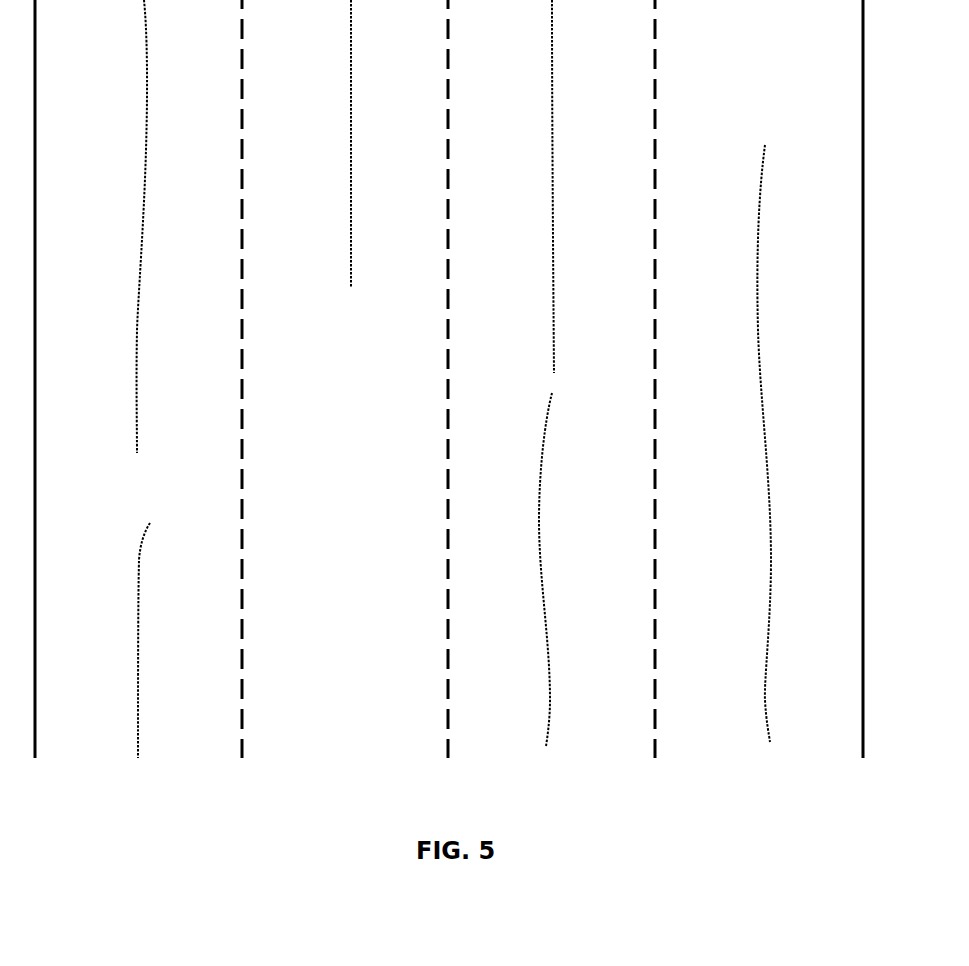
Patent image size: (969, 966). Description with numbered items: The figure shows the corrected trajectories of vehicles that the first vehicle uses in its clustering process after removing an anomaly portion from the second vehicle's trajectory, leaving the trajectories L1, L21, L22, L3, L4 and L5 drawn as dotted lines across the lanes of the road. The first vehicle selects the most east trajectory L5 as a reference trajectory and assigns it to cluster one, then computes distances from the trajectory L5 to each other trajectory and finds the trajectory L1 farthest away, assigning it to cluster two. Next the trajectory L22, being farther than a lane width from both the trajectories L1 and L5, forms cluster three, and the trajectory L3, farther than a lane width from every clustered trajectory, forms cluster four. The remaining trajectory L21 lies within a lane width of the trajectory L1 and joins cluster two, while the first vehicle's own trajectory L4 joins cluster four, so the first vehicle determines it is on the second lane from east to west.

The trajectory L1 is at (121, 226).
The portion of the trajectory L21 is at (122, 639).
The portion of the trajectory L22 is at (381, 144).
The trajectory L3 is at (531, 186).
The trajectory L4 is at (524, 569).
The trajectory L5 is at (743, 443).